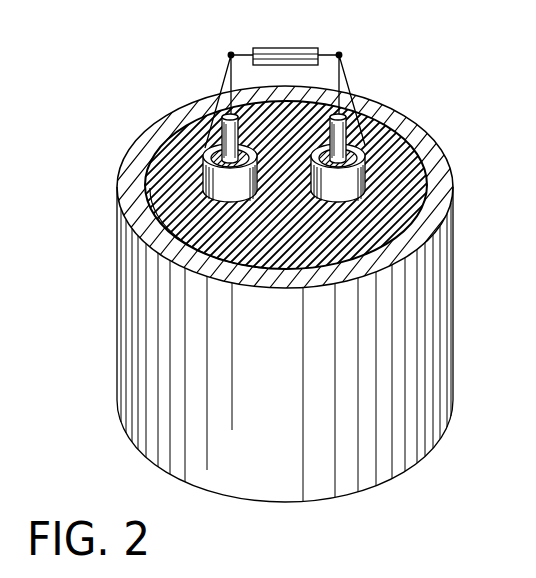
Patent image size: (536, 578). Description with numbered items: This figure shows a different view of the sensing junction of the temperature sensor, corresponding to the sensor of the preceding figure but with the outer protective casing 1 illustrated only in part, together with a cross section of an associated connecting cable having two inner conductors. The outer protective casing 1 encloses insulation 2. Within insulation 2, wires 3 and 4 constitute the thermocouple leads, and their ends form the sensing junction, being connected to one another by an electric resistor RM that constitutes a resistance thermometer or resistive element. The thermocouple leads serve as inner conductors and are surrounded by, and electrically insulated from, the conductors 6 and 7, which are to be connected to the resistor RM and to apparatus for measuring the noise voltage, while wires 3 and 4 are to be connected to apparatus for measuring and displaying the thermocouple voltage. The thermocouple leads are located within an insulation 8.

The electric resistor RM is at (278, 54).
The outer protective casing 1 is at (374, 110).
The insulation 2 is at (268, 247).
The wire 3 is at (233, 137).
The wire 4 is at (289, 114).
The conductor 6 is at (368, 150).
The conductor 7 is at (206, 149).
The insulation 8 is at (312, 163).